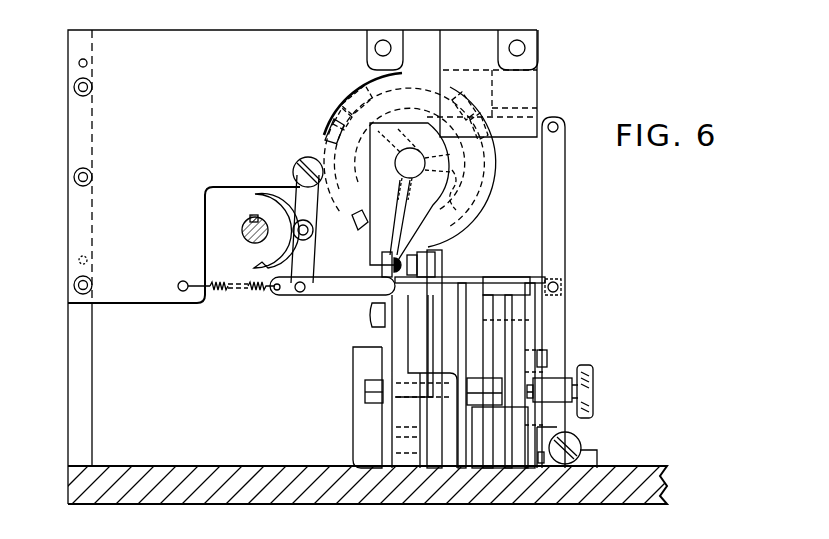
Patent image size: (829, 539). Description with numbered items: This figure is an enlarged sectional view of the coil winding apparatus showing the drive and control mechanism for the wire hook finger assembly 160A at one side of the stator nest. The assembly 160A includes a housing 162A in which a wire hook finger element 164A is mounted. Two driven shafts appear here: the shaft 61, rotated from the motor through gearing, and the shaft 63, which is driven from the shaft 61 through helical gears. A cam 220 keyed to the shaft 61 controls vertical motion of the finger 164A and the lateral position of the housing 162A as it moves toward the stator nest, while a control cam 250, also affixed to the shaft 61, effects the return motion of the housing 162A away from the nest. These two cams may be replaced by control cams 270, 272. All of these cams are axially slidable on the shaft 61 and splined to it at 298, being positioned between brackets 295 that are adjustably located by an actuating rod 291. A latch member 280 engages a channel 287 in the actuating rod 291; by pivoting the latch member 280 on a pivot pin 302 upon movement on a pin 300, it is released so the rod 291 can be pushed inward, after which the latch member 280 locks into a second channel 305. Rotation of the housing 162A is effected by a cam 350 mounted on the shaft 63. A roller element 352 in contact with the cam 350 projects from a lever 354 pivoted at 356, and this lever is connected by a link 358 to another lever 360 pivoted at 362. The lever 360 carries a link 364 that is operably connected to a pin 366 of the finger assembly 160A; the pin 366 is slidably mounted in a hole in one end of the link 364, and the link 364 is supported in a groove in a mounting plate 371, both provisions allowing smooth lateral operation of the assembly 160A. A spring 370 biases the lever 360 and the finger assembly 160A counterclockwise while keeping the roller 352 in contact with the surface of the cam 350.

The shaft 61 is at (368, 333).
The shaft 63 is at (242, 232).
The wire hook finger assembly 160A is at (508, 177).
The housing 162A is at (345, 96).
The wire hook finger element 164A is at (337, 110).
The cam 220 is at (383, 290).
The control cam 250 is at (388, 277).
The control cam 270 is at (435, 287).
The control cam 272 is at (455, 281).
The latch member 280 is at (523, 421).
The channel 287 is at (533, 390).
The actuating rod 291 is at (563, 392).
The bracket 295 is at (392, 438).
The spline 298 is at (375, 306).
The pin 300 is at (557, 427).
The pivot pin 302 is at (540, 464).
The channel 305 is at (577, 378).
The cam 350 is at (232, 208).
The roller element 352 is at (366, 222).
The lever 354 is at (298, 205).
The pivot 356 is at (310, 158).
The link 358 is at (318, 293).
The lever 360 is at (565, 218).
The pivot 362 is at (582, 446).
The link 364 is at (541, 110).
The pin 366 is at (397, 122).
The spring 370 is at (242, 291).
The mounting plate 371 is at (525, 88).